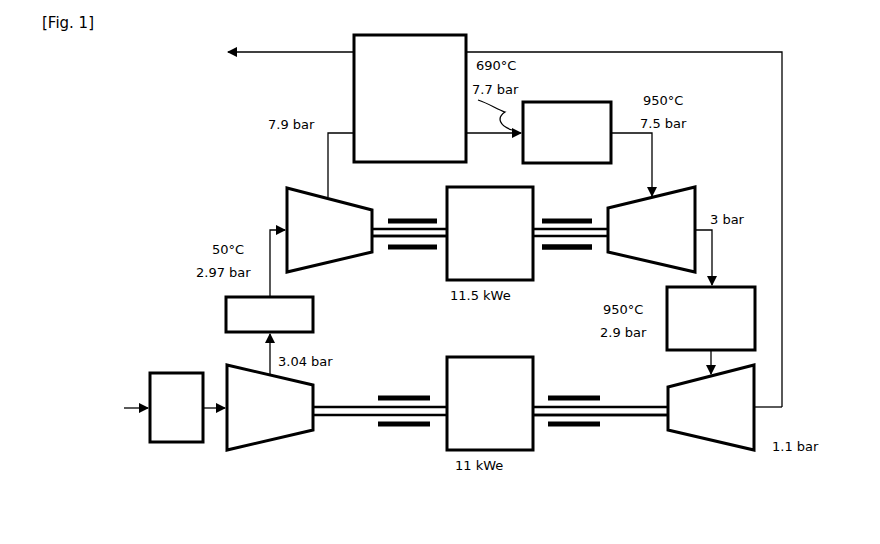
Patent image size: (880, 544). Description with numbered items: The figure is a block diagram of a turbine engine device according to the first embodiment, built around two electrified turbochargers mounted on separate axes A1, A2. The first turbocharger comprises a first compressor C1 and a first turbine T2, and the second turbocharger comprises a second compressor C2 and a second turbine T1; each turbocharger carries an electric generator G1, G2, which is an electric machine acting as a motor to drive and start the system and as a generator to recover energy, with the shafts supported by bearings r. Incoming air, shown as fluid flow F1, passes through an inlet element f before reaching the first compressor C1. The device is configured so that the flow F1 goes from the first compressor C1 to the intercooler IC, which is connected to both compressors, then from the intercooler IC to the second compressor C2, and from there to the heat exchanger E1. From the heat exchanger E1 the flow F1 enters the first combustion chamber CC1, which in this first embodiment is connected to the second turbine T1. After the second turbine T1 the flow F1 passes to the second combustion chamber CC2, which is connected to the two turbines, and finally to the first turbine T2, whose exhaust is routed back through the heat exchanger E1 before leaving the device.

The heat exchanger E1 is at (410, 98).
The first combustion chamber CC1 is at (567, 132).
The second combustion chamber CC2 is at (711, 318).
The first compressor C1 is at (270, 407).
The second compressor C2 is at (329, 230).
The second turbine T1 is at (651, 229).
The first turbine T2 is at (711, 407).
The electric generator G1 is at (490, 233).
The electric generator G2 is at (490, 403).
The intercooler IC is at (269, 314).
The filter f is at (176, 407).
The axis A1 is at (630, 418).
The axis A2 is at (381, 238).
The bearings r is at (567, 252).
The fluid flow F1 is at (84, 398).